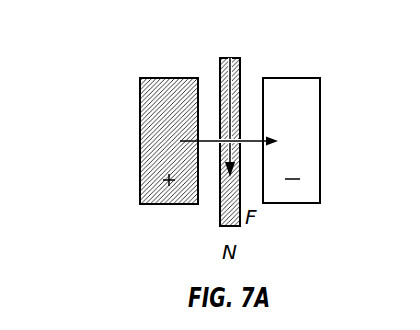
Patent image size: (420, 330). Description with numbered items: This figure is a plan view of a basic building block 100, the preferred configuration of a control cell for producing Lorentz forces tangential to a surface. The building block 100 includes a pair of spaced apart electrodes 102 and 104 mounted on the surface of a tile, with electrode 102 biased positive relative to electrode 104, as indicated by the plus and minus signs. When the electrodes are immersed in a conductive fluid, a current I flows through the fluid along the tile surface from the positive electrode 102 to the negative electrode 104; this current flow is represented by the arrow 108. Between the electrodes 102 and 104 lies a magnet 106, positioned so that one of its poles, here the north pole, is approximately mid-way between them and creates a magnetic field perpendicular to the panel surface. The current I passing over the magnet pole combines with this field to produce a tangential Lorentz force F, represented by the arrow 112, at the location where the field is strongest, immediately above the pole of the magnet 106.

The basic building block 100 is at (80, 47).
The electrode 102 is at (135, 140).
The electrode 104 is at (326, 139).
The magnet 106 is at (193, 154).
The arrow 108 is at (215, 93).
The arrow 112 is at (267, 108).